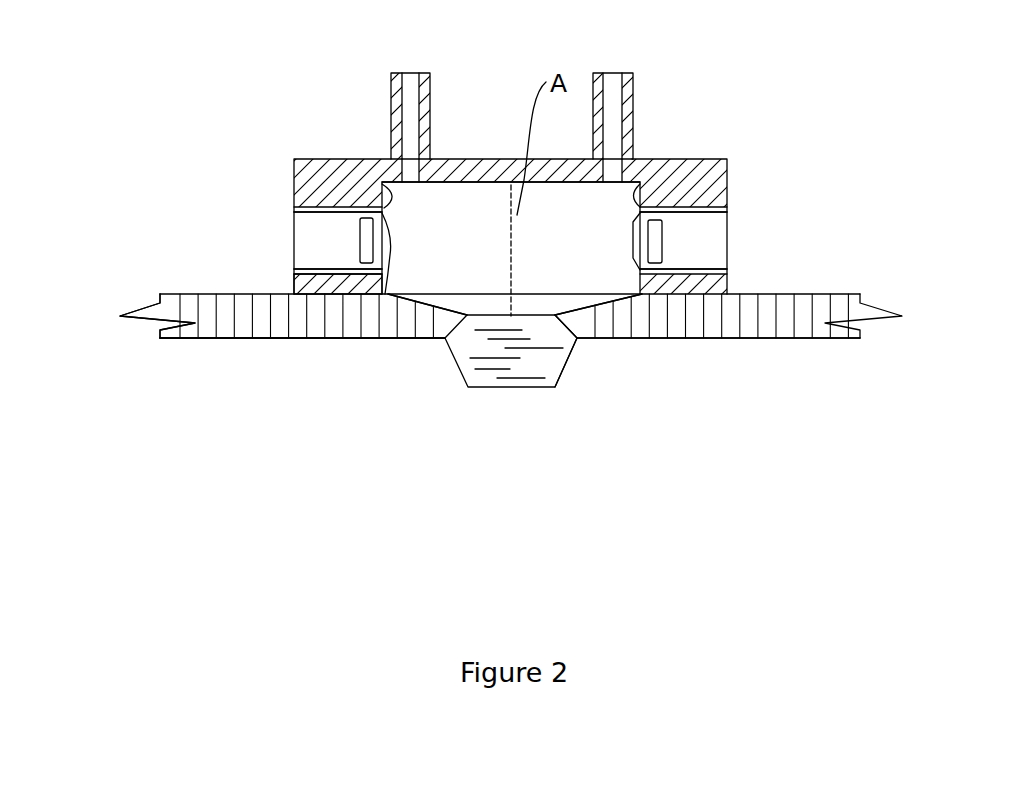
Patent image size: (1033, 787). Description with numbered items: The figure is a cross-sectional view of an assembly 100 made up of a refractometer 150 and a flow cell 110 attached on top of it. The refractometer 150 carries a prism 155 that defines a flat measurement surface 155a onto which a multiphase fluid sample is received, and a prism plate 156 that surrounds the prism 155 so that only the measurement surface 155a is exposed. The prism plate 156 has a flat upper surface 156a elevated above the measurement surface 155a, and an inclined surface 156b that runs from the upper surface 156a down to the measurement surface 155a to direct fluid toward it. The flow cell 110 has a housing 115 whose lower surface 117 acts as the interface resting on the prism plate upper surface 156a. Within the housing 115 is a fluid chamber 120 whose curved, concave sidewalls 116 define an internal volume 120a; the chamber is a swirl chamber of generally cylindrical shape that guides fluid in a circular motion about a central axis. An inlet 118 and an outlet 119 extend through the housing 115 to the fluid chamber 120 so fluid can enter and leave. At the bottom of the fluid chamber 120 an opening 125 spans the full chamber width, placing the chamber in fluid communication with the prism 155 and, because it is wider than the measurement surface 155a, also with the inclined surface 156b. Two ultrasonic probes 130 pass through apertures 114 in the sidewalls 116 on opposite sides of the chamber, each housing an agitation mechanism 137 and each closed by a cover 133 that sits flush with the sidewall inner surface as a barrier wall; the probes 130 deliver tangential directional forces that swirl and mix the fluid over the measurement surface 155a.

The assembly 100 is at (355, 143).
The flow cell 110 is at (727, 170).
The apertures 114 is at (345, 208).
The housing 115 is at (683, 173).
The sidewalls 116 is at (380, 170).
The lower surface 117 is at (307, 293).
The inlet 118 is at (389, 91).
The outlet 119 is at (633, 88).
The fluid chamber 120 is at (485, 232).
The internal volume 120a is at (452, 192).
The opening 125 is at (590, 295).
The ultrasonic probes 130 is at (303, 230).
The cover 133 is at (443, 307).
The agitation mechanism 137 is at (365, 232).
The refractometer 150 is at (785, 347).
The prism 155 is at (465, 358).
The flat measurement surface 155a is at (572, 347).
The prism plate 156 is at (820, 314).
The upper surface 156a is at (180, 312).
The inclined surface 156b is at (409, 338).